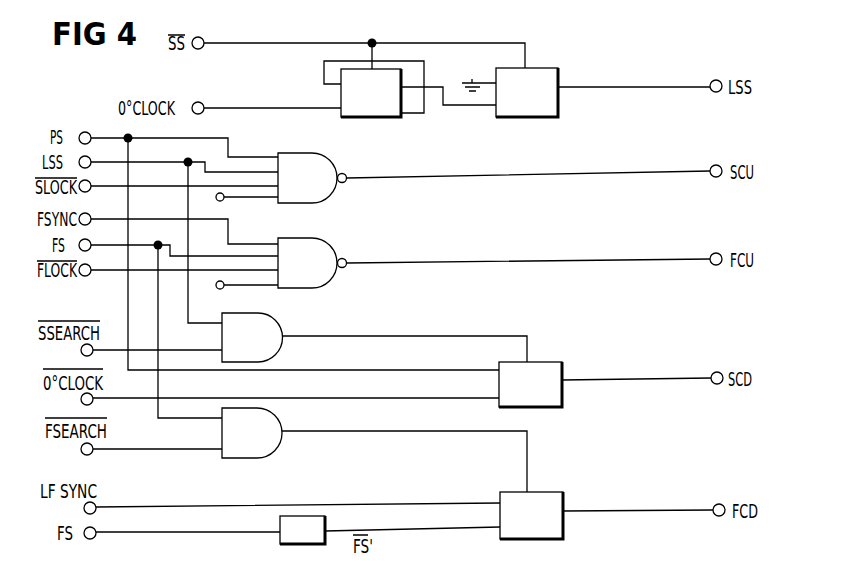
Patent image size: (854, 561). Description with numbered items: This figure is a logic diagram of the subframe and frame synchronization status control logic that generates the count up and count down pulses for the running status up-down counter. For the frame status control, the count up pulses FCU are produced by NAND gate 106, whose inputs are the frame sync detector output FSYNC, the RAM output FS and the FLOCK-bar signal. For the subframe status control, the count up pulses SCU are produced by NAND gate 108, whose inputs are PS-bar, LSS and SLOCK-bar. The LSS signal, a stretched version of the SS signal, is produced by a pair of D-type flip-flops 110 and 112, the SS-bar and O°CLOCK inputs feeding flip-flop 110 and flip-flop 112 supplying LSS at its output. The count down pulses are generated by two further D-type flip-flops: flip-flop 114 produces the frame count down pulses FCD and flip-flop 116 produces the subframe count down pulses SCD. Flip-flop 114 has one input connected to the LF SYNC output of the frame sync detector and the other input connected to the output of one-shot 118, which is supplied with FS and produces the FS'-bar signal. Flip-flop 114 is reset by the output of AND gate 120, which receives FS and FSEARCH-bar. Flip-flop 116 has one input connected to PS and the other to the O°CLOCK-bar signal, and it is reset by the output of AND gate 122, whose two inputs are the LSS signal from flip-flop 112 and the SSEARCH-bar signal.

The NAND gate 106 is at (330, 258).
The NAND gate 108 is at (334, 185).
The D-type flip-flop 110 is at (396, 118).
The D-type flip-flop 112 is at (528, 118).
The D-type flip-flop 114 is at (560, 528).
The D-type flip-flop 116 is at (558, 395).
The one-shot 118 is at (282, 544).
The AND gate 120 is at (276, 428).
The AND gate 122 is at (273, 324).